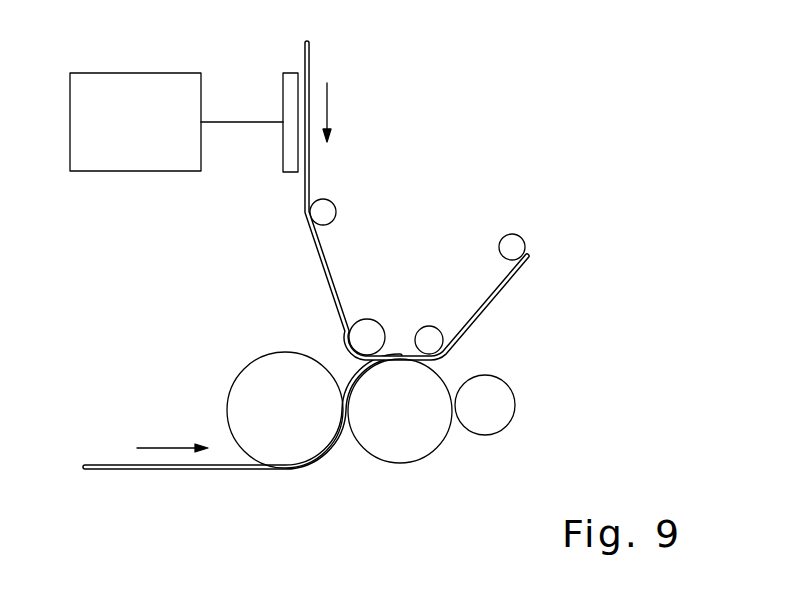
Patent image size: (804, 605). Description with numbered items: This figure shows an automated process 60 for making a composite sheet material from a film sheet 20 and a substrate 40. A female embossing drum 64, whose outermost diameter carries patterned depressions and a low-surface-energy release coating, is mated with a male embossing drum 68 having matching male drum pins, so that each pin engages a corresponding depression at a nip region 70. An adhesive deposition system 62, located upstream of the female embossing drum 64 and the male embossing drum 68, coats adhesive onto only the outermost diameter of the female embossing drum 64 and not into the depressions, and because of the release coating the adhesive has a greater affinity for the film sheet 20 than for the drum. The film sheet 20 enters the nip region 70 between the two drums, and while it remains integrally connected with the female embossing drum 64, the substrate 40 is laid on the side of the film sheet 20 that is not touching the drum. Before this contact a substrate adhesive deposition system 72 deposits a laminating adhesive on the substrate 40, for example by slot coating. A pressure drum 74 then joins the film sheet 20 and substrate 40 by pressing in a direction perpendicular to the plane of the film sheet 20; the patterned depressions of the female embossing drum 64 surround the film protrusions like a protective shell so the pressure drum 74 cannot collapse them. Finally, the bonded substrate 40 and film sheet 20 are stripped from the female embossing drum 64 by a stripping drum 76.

The film sheet 20 is at (192, 468).
The substrate 40 is at (317, 251).
The automated process 60 is at (478, 142).
The adhesive deposition system 62 is at (493, 405).
The female embossing drum 64 is at (413, 442).
The male embossing drum 68 is at (268, 380).
The nip region 70 is at (349, 448).
The substrate adhesive deposition system 72 is at (128, 36).
The pressure drum 74 is at (362, 335).
The stripping drum 76 is at (427, 340).